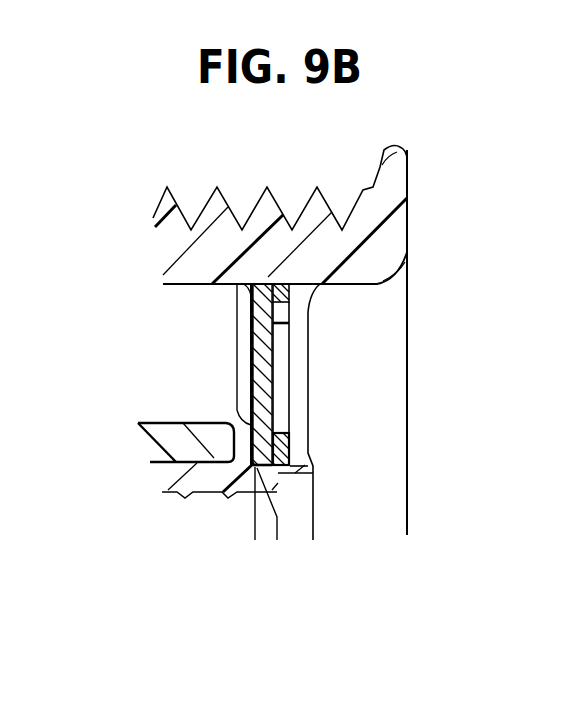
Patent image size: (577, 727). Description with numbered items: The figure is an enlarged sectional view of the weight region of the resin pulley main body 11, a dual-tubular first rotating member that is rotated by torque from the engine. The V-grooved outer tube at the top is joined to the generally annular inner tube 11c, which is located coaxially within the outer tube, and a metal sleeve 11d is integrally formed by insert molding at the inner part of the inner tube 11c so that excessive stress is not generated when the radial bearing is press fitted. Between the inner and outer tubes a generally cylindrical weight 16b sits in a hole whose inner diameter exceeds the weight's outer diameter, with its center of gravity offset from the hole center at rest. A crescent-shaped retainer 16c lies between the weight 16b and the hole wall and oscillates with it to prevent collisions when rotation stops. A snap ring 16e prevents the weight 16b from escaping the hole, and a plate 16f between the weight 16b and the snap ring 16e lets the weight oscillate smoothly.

The pulley main body 11 is at (384, 232).
The weight 16b is at (188, 355).
The retainer 16c is at (215, 445).
The snap ring 16e is at (292, 312).
The plate 16f is at (255, 540).
The inner tube 11c is at (263, 482).
The metal sleeve 11d is at (297, 518).